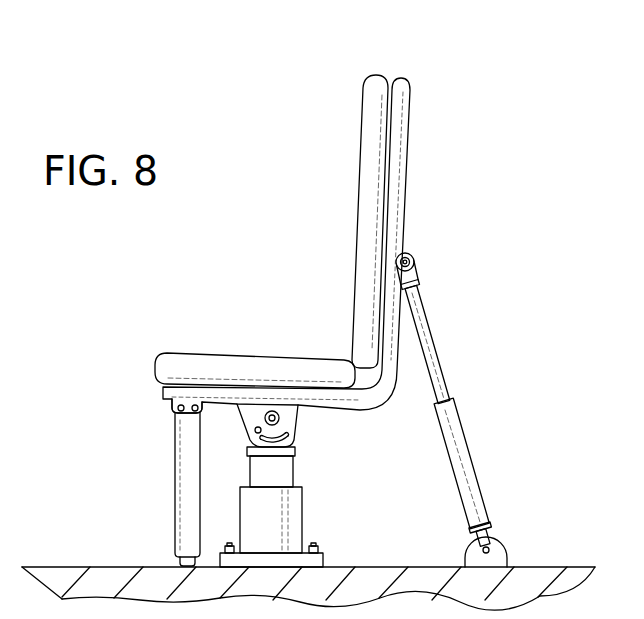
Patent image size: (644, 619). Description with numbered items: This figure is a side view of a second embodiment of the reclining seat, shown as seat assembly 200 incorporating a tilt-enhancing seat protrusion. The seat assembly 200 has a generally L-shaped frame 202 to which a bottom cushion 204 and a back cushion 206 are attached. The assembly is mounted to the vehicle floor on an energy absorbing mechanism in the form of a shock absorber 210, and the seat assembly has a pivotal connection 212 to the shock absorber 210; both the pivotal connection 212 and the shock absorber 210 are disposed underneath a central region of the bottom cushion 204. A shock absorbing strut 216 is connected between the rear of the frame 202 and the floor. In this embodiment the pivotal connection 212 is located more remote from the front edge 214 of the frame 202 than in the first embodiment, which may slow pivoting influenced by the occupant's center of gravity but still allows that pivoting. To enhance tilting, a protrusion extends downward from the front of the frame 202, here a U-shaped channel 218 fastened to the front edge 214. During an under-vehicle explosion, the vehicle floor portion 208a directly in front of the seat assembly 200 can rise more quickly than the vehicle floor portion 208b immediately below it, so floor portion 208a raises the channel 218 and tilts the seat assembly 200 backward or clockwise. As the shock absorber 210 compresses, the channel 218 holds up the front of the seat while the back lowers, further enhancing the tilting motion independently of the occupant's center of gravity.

The seat assembly 200 is at (476, 99).
The L-shaped frame 202 is at (408, 147).
The bottom cushion 204 is at (312, 356).
The back cushion 206 is at (380, 73).
The vehicle floor portion 208a is at (133, 565).
The vehicle floor portion 208b is at (283, 563).
The shock absorber 210 is at (302, 520).
The pivotal connection 212 is at (293, 425).
The front edge 214 is at (163, 391).
The shock absorbing strut 216 is at (460, 445).
The U-shaped channel 218 is at (172, 508).